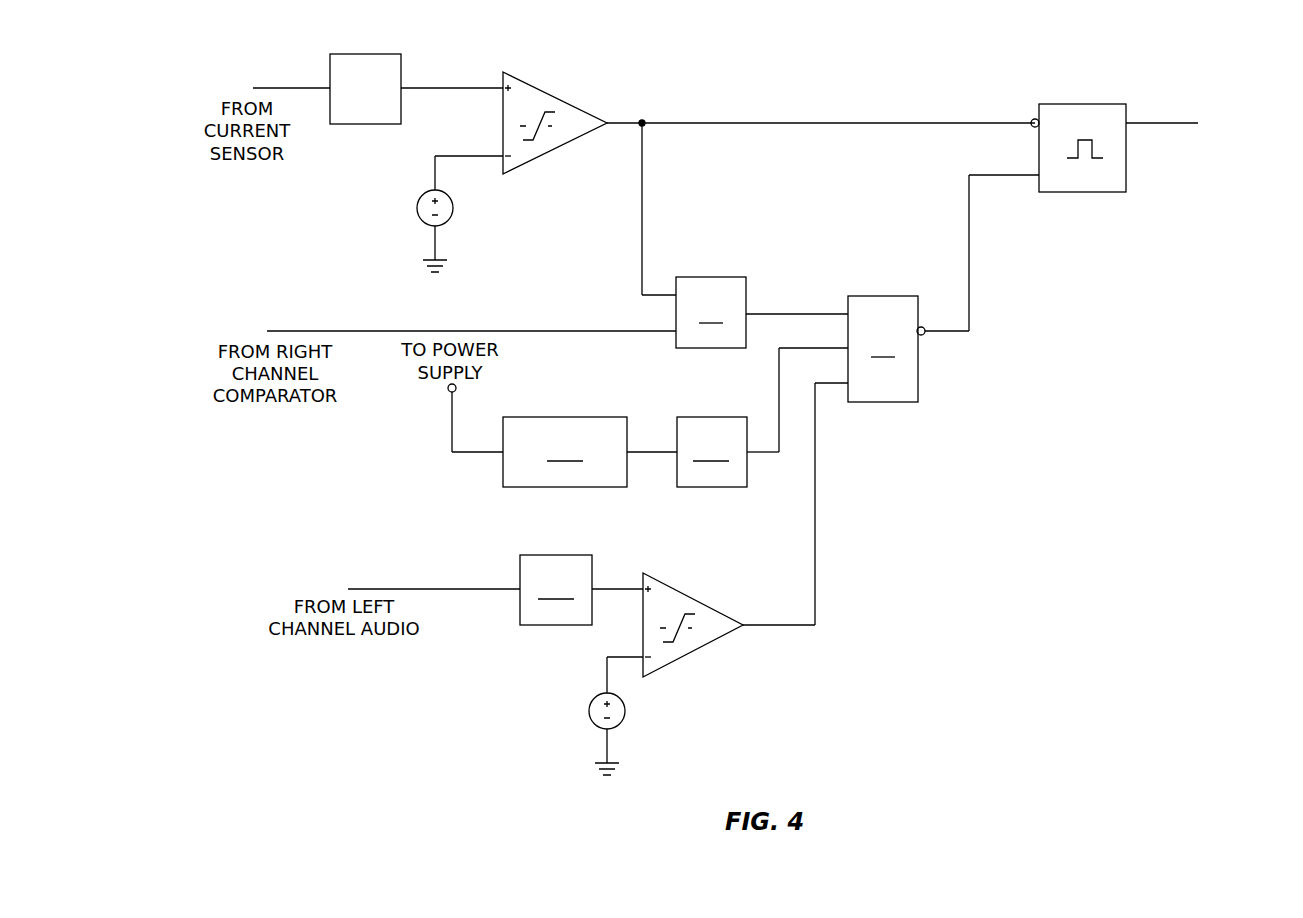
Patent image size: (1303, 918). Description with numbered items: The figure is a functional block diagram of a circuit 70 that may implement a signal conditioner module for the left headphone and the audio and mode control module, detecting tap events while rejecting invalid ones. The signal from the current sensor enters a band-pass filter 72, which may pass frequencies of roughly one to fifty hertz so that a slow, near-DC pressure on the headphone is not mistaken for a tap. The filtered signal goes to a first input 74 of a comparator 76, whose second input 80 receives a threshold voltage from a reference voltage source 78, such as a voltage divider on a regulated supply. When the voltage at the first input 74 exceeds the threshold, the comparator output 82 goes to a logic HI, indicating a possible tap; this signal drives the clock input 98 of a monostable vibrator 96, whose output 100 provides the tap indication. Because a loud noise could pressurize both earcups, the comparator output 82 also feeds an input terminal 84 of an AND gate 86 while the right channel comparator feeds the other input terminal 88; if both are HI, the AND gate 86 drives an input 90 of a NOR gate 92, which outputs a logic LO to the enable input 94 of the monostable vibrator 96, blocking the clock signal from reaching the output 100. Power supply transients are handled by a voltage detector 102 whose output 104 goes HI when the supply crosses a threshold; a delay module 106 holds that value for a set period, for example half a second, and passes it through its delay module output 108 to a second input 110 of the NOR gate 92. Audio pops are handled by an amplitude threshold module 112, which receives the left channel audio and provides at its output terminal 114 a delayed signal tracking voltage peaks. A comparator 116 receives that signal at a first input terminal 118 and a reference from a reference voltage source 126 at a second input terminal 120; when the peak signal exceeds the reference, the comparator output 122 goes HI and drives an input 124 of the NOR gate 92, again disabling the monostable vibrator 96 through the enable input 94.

The circuit 70 is at (1163, 414).
The band-pass filter 72 is at (368, 53).
The first input of comparator 74 is at (503, 88).
The comparator 76 is at (537, 80).
The reference voltage source 78 is at (417, 208).
The second input of comparator 80 is at (503, 173).
The comparator output 82 is at (607, 122).
The input terminal of AND gate 84 is at (672, 297).
The AND gate 86 is at (711, 312).
The other input terminal of AND gate 88 is at (675, 333).
The input of NOR gate 90 is at (847, 307).
The NOR gate 92 is at (886, 349).
The enable input of monostable vibrator 94 is at (1038, 177).
The monostable vibrator 96 is at (1083, 103).
The clock input of monostable vibrator 98 is at (1031, 122).
The output of monostable vibrator 100 is at (1127, 125).
The voltage detector 102 is at (537, 435).
The output of voltage detector 104 is at (628, 448).
The delay module 106 is at (712, 452).
The output of block 106 108 is at (748, 453).
The second input of NOR gate 110 is at (850, 348).
The amplitude threshold module 112 is at (556, 590).
The output terminal of amplitude threshold module 114 is at (593, 585).
The comparator 116 is at (695, 598).
The first input terminal of comparator 118 is at (640, 587).
The second input terminal of comparator 120 is at (645, 660).
The comparator output 122 is at (743, 627).
The input of NOR gate 124 is at (847, 387).
The reference voltage source 126 is at (588, 711).